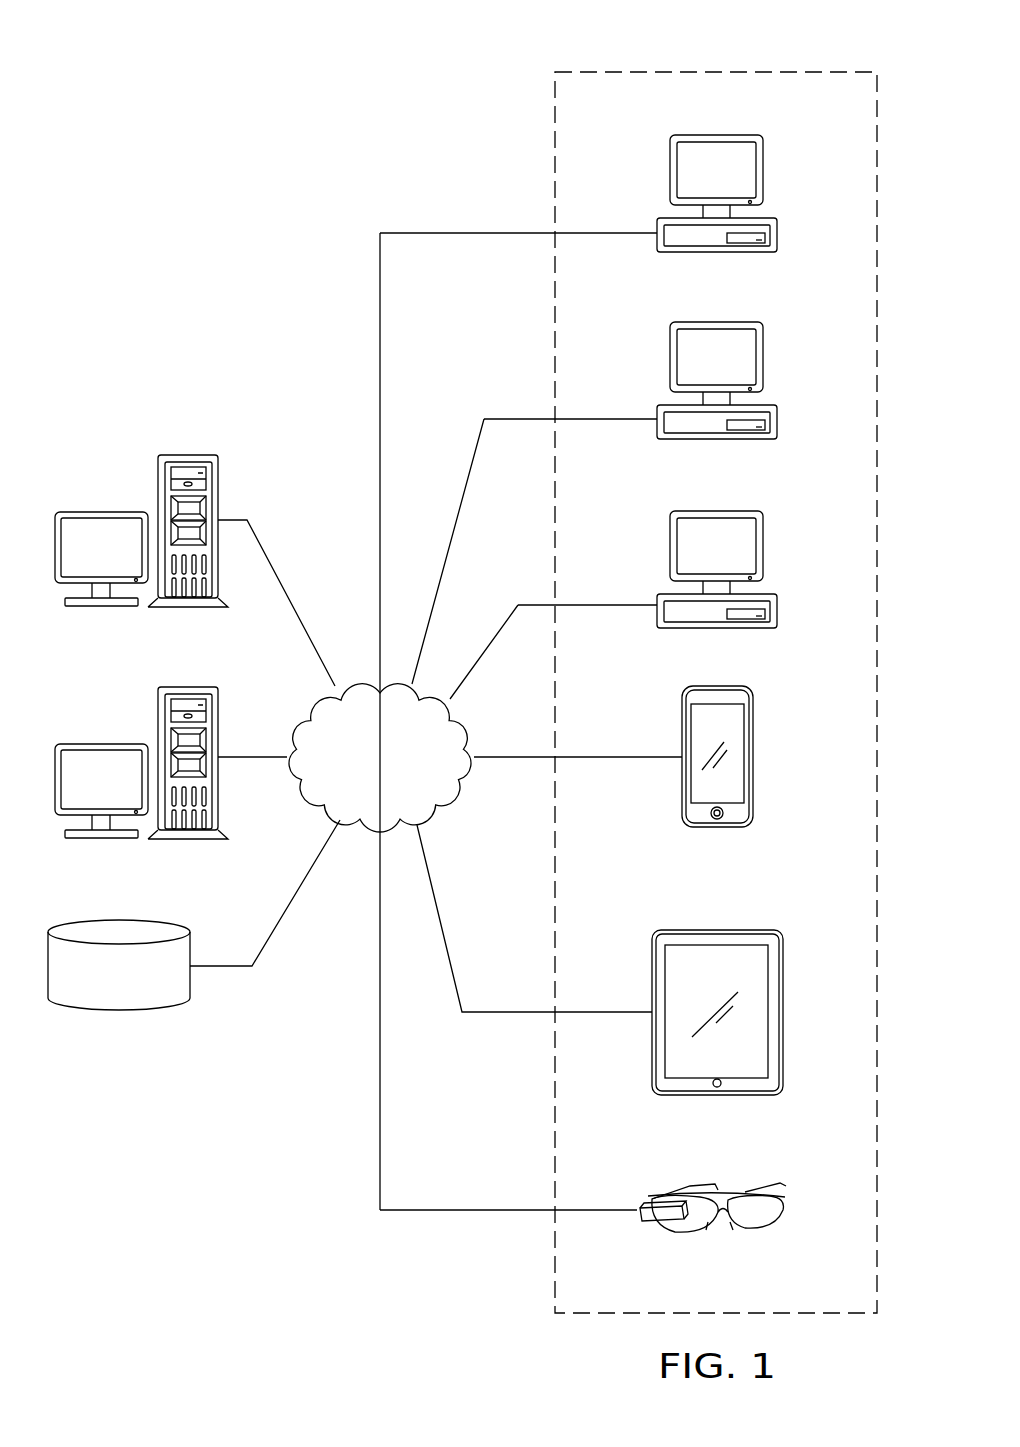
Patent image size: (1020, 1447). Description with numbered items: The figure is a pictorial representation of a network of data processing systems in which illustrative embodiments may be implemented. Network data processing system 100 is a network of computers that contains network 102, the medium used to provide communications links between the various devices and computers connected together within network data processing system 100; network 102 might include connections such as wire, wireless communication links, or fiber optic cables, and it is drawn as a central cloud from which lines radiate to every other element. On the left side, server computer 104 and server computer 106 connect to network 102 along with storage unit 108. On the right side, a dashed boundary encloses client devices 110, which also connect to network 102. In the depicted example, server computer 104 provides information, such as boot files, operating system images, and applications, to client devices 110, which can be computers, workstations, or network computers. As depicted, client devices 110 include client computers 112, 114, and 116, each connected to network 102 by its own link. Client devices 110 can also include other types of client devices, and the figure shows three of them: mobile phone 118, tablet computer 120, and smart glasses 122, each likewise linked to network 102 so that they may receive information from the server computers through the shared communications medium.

The network data processing system 100 is at (242, 323).
The network 102 is at (401, 791).
The server computer 104 is at (103, 512).
The server computer 106 is at (148, 775).
The storage unit 108 is at (117, 1013).
The client devices 110 is at (757, 72).
The client computer 112 is at (764, 170).
The client computer 114 is at (730, 396).
The client computer 116 is at (730, 585).
The mobile phone 118 is at (754, 775).
The tablet computer 120 is at (784, 1022).
The smart glasses 122 is at (780, 1212).